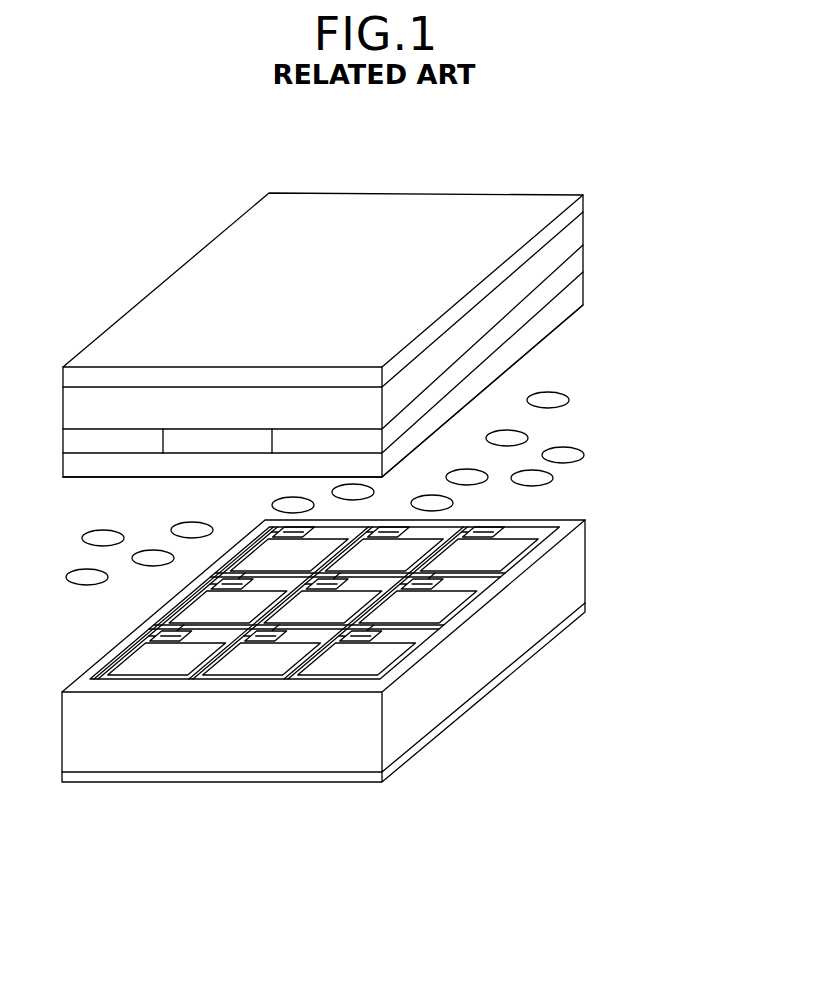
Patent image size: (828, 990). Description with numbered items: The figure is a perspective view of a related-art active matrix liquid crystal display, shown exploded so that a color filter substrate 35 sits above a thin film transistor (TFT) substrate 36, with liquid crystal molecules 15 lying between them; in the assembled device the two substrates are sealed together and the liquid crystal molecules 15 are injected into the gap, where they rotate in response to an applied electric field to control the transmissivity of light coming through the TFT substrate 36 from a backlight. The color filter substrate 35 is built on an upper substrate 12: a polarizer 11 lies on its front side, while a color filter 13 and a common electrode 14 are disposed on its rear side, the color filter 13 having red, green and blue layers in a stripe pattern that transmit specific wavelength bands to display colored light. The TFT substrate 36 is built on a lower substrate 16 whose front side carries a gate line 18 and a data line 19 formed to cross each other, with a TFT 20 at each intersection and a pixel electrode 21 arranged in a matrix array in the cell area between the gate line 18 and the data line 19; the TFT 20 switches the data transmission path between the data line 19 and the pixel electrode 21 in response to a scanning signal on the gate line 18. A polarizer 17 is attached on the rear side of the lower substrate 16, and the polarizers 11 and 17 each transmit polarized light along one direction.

The polarizer 11 is at (583, 205).
The upper substrate 12 is at (583, 238).
The color filter 13 is at (583, 268).
The common electrode 14 is at (583, 295).
The liquid crystal molecules 15 is at (569, 400).
The lower substrate 16 is at (577, 568).
The polarizer 17 is at (585, 607).
The gate line 18 is at (500, 582).
The data line 19 is at (288, 678).
The TFT 20 is at (359, 647).
The pixel electrode 21 is at (417, 647).
The color filter substrate 35 is at (673, 205).
The thin film transistor (TFT) substrate 36 is at (676, 543).